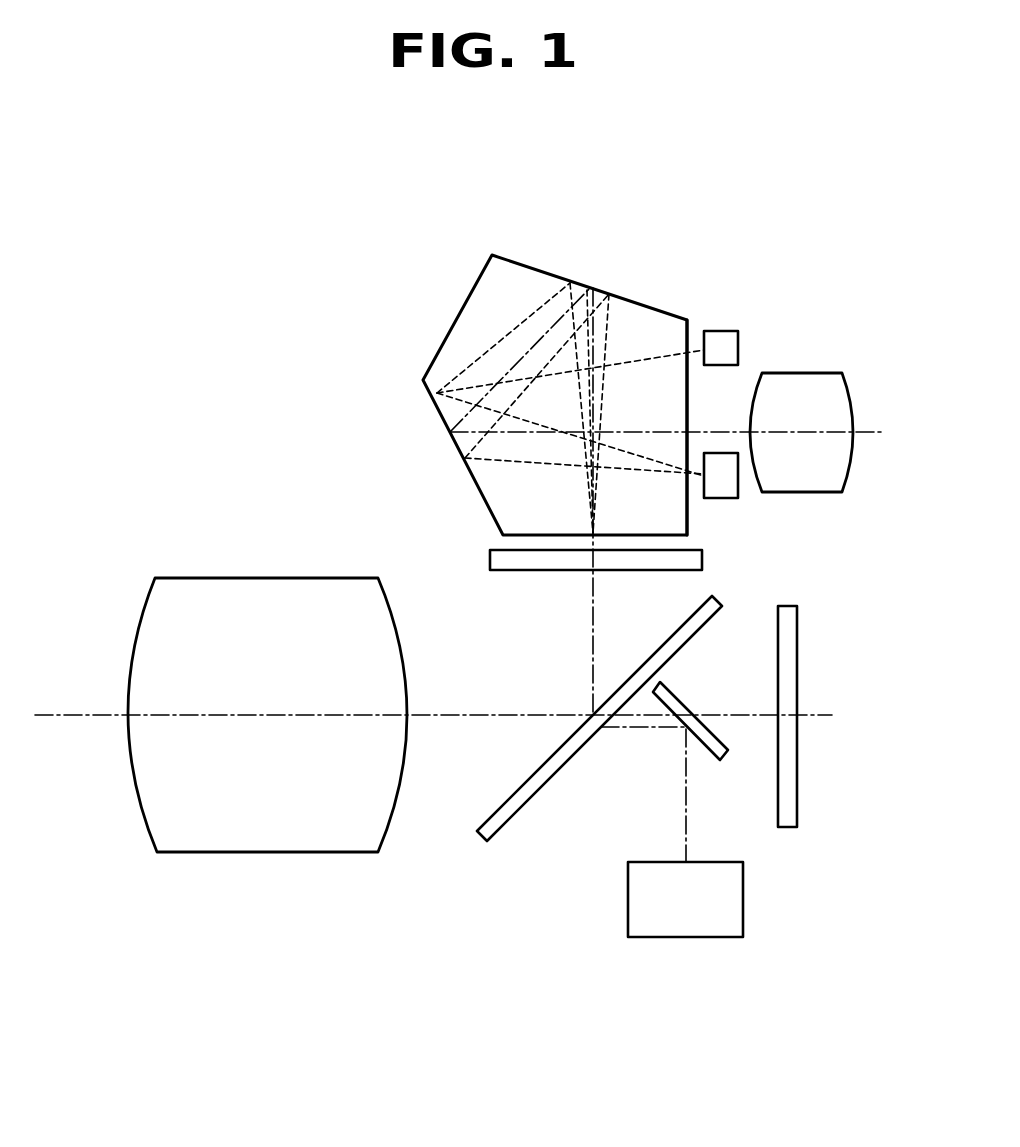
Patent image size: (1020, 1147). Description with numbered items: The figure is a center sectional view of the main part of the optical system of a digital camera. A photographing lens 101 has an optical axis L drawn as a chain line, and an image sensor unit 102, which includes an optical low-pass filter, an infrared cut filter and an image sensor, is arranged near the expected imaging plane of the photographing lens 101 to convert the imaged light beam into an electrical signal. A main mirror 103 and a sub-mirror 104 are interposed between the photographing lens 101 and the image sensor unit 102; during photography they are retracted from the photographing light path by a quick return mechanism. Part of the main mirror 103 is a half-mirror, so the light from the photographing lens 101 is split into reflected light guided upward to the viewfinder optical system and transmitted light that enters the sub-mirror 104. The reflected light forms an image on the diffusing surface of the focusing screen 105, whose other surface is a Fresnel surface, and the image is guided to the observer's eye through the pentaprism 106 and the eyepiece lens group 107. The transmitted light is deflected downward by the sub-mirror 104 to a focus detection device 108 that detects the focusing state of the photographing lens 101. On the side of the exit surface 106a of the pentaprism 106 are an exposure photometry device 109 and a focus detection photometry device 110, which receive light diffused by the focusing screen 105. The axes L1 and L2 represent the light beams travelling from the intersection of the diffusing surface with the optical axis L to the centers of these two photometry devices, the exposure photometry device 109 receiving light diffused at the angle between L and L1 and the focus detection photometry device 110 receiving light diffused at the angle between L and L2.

The photographing lens 101 is at (265, 600).
The image sensor unit 102 is at (787, 637).
The main mirror 103 is at (512, 808).
The sub-mirror 104 is at (725, 752).
The focusing screen 105 is at (702, 555).
The pentaprism 106 is at (463, 330).
The exit surface 106a is at (690, 327).
The eyepiece lens group 107 is at (823, 397).
The focus detection device 108 is at (743, 893).
The exposure photometry device 109 is at (727, 345).
The focus detection photometry device 110 is at (727, 478).
The optical axis L is at (243, 713).
The light beam axis L1 is at (530, 313).
The light beam axis L2 is at (537, 368).